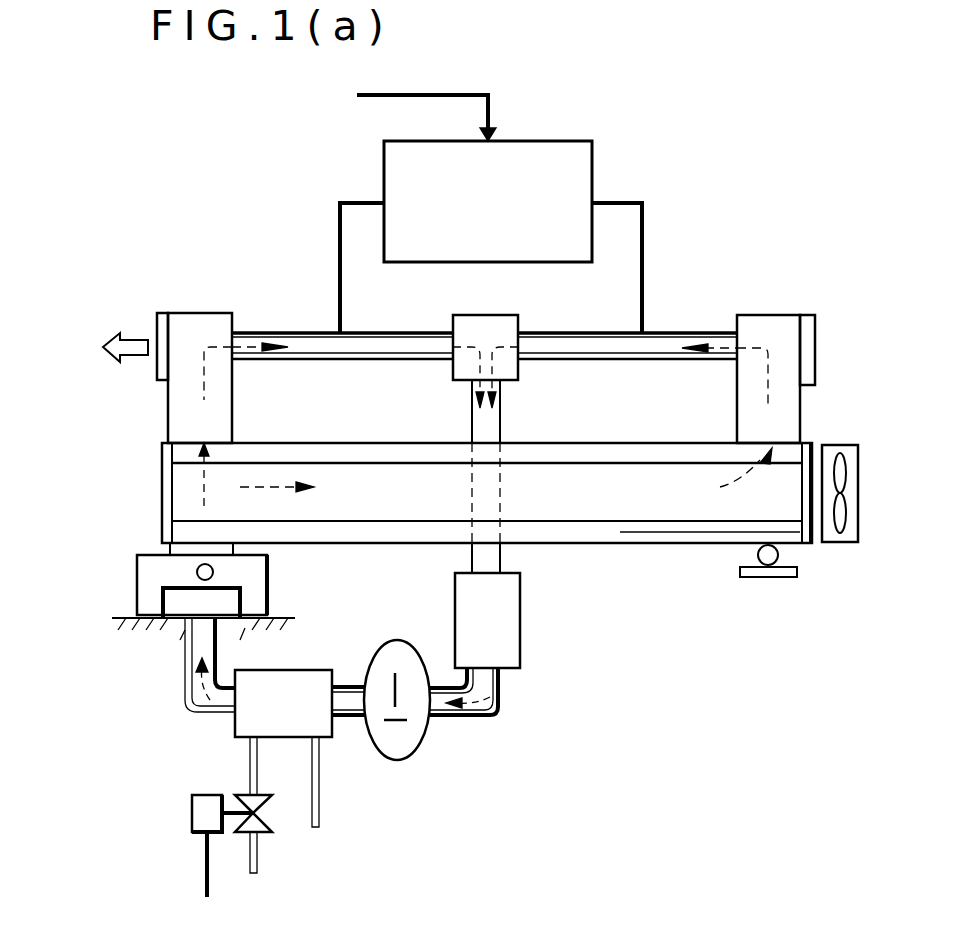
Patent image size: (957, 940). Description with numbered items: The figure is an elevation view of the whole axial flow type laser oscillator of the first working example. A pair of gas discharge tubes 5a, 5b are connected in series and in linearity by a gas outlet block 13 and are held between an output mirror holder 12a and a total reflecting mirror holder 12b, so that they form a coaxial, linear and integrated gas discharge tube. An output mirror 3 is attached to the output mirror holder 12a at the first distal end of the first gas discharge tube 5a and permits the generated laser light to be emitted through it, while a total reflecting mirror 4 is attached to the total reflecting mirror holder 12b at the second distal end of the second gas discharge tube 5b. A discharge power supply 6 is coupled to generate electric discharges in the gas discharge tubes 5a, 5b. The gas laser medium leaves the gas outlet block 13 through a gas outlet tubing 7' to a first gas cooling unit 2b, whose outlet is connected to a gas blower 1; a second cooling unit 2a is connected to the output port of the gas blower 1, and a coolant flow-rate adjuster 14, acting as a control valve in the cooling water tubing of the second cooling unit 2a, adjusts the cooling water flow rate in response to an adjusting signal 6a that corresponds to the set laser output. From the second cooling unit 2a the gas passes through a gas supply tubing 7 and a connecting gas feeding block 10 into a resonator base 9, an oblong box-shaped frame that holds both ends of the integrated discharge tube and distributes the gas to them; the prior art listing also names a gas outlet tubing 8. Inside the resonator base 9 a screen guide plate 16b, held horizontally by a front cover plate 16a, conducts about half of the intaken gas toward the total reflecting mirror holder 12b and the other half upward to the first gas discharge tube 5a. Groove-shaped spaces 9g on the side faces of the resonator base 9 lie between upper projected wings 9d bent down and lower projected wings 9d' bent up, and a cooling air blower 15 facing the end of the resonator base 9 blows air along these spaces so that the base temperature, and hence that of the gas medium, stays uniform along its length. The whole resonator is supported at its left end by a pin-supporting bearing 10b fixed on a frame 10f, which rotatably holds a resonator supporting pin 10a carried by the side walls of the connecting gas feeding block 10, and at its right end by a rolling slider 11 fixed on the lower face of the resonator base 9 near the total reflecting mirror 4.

The gas blower 1 is at (416, 746).
The second gas cooling unit 2a is at (316, 670).
The first gas cooling unit 2b is at (520, 634).
The output mirror 3 is at (161, 313).
The total reflecting mirror 4 is at (808, 315).
The first gas discharge tube 5a is at (340, 359).
The second gas discharge tube 5b is at (604, 359).
The discharge power supply 6 is at (562, 141).
The adjusting signal 6a is at (378, 98).
The gas supply tubing 7 is at (181, 665).
The gas outlet tubing 7' is at (509, 411).
The gas outlet tubing 8 is at (500, 568).
The resonator base 9 is at (672, 545).
The upper projected wings 9d is at (590, 435).
The lower projected wings 9d' is at (600, 569).
The groove-shaped spaces 9g is at (692, 502).
The connecting gas feeding block 10 is at (160, 555).
The resonator supporting pin 10a is at (197, 571).
The pin-supporting bearing 10b is at (270, 592).
The frame 10f is at (142, 628).
The rolling slider 11 is at (771, 578).
The output mirror holder 12a is at (217, 320).
The total reflecting mirror holder 12b is at (752, 320).
The gas outlet block 13 is at (518, 316).
The coolant flow-rate adjuster 14 is at (190, 812).
The cooling air blower 15 is at (840, 444).
The front cover plate 16a is at (162, 475).
The screen guide plate 16b is at (812, 533).